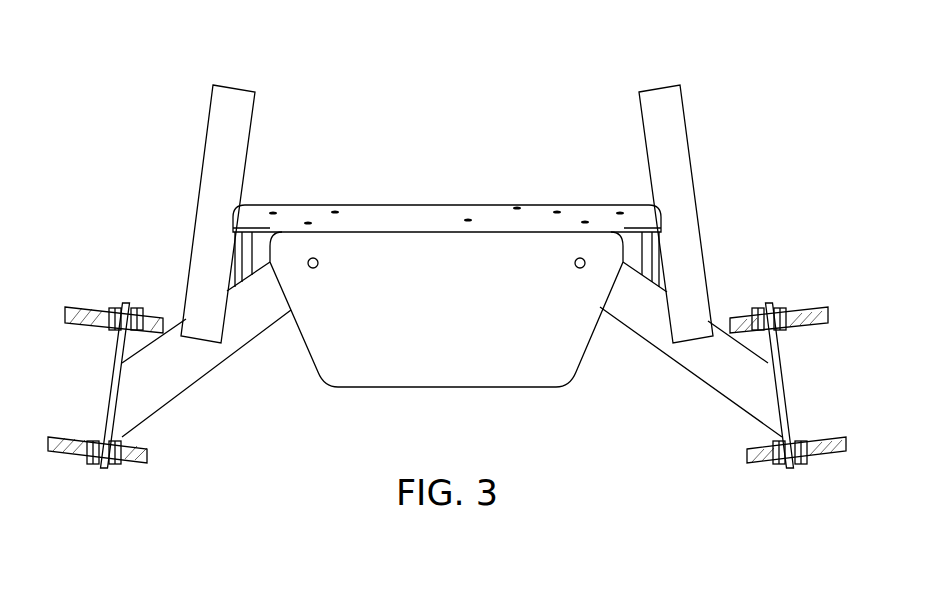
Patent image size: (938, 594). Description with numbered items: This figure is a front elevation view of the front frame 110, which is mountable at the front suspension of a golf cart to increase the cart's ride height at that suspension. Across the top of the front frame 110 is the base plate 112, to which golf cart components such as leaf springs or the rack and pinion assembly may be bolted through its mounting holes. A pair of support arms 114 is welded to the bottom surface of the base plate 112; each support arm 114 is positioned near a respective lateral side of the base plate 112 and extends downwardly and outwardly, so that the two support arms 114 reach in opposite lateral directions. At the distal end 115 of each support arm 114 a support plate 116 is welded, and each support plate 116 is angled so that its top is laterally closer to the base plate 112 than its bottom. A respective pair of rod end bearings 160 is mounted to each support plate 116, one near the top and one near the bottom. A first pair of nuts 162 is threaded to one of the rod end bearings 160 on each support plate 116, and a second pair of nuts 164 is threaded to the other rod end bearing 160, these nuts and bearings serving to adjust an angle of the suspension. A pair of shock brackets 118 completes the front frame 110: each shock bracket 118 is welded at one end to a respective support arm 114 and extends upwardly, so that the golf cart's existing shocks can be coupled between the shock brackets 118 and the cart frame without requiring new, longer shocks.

The front frame 110 is at (760, 130).
The base plate 112 is at (422, 215).
The support arm 114 is at (187, 362).
The distal end 115 is at (122, 414).
The support plate 116 is at (112, 390).
The shock bracket 118 is at (215, 205).
The rod end bearing 160 is at (92, 310).
The first nut 162 is at (95, 468).
The second nut 164 is at (116, 304).